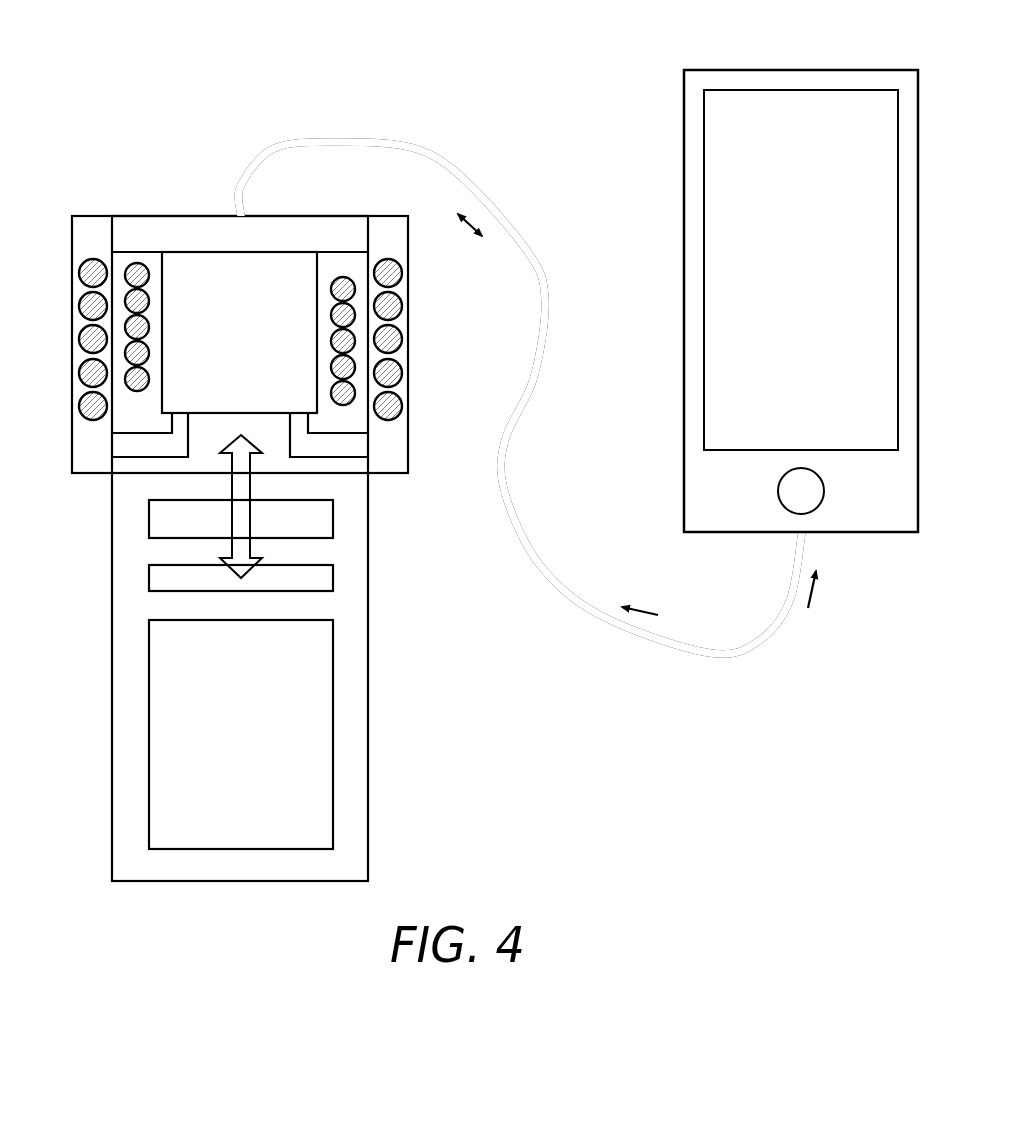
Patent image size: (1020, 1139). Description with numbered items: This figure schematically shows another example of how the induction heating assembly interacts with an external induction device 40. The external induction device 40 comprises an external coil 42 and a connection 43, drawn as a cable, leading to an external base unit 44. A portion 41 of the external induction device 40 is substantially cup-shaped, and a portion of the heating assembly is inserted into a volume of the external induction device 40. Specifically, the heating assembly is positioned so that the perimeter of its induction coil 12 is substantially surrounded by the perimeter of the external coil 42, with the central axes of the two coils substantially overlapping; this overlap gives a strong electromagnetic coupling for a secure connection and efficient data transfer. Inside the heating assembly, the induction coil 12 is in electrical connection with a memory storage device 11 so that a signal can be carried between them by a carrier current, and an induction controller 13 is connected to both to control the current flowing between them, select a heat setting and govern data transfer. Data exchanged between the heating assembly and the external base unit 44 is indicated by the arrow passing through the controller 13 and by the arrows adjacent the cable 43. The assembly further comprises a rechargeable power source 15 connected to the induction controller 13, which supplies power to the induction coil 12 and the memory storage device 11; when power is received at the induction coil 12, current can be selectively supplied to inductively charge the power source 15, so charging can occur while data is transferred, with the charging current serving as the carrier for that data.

The external induction device 40 is at (126, 104).
The portion of the external induction device 41 is at (72, 232).
The external coil 42 is at (79, 373).
The induction coil 12 is at (347, 342).
The induction controller 13 is at (333, 515).
The memory storage device 11 is at (333, 578).
The rechargeable power source 15 is at (333, 630).
The connection 43 is at (472, 188).
The external base unit 44 is at (892, 70).